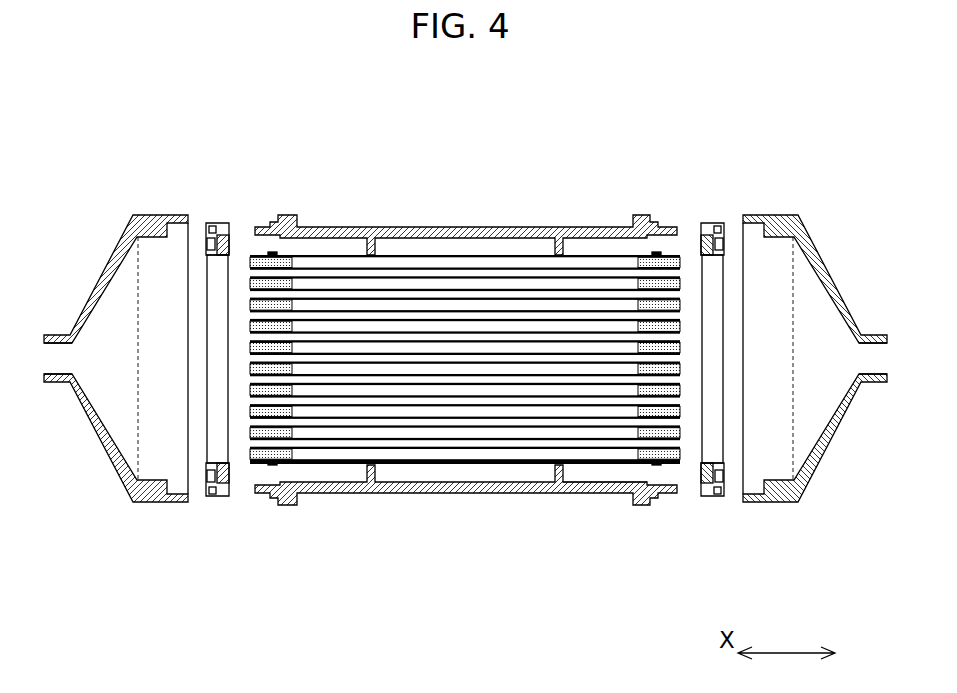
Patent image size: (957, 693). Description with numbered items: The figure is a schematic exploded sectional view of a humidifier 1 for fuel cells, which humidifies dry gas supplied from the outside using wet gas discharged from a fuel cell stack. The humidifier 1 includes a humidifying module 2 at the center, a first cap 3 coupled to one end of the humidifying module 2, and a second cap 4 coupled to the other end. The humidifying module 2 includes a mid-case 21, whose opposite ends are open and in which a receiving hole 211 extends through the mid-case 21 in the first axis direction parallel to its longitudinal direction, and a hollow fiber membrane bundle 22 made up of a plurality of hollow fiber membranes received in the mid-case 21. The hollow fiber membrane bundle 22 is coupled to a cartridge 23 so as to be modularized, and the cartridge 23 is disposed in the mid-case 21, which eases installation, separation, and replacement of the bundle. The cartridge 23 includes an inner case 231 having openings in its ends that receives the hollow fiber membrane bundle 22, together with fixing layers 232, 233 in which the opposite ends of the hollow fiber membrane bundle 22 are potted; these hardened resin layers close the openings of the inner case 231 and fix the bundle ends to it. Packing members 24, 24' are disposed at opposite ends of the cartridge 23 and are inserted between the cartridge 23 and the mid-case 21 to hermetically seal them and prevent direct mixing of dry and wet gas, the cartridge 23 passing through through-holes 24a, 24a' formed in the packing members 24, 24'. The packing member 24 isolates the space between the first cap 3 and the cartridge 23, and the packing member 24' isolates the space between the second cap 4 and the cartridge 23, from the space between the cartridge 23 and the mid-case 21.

The humidifier for fuel cells 1 is at (50, 174).
The humidifying module 2 is at (718, 147).
The first cap 3 is at (95, 431).
The second cap 4 is at (835, 430).
The mid-case 21 is at (466, 369).
The hollow fiber membrane bundle 22 is at (465, 369).
The cartridge 23 is at (320, 467).
The packing member 24 is at (218, 369).
The packing member 24' is at (737, 369).
The through-hole 24a is at (195, 421).
The through-hole 24a' is at (737, 421).
The receiving hole 211 is at (608, 470).
The inner case 231 is at (452, 465).
The fixing layer 232 is at (267, 464).
The fixing layer 233 is at (665, 457).